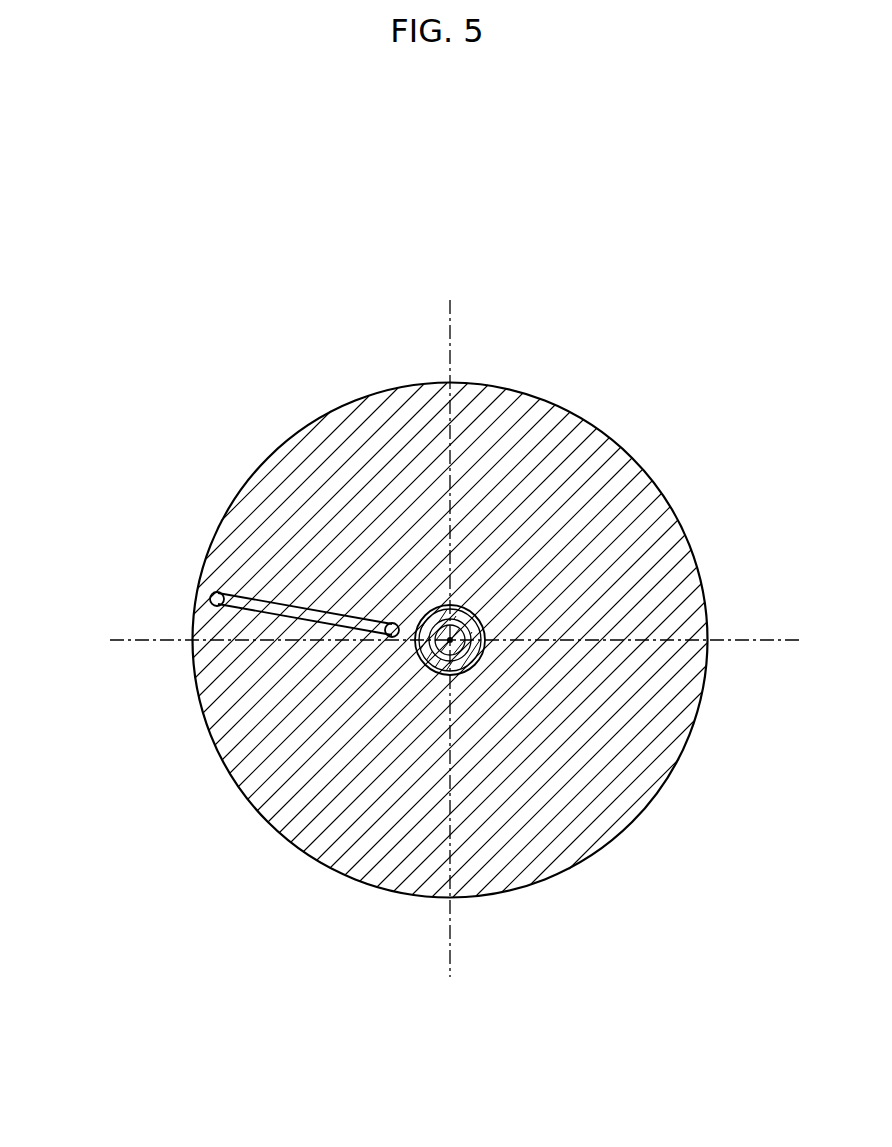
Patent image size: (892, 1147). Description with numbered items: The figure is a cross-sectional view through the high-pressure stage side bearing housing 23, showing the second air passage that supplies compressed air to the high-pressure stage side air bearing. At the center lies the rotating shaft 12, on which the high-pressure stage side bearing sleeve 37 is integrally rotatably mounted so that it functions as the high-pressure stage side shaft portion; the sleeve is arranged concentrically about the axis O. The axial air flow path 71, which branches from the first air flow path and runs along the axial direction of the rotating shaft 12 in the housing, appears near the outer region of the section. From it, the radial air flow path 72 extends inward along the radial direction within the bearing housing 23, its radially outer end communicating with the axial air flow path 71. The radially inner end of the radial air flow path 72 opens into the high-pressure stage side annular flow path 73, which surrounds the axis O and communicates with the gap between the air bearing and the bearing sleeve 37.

The high-pressure stage side bearing housing 23 is at (370, 390).
The rotating shaft 12 is at (482, 617).
The axis O is at (450, 640).
The axial air flow path 71 is at (210, 595).
The radial air flow path 72 is at (303, 618).
The high-pressure stage side annular flow path 73 is at (390, 637).
The high-pressure stage side bearing sleeve 37 is at (482, 657).